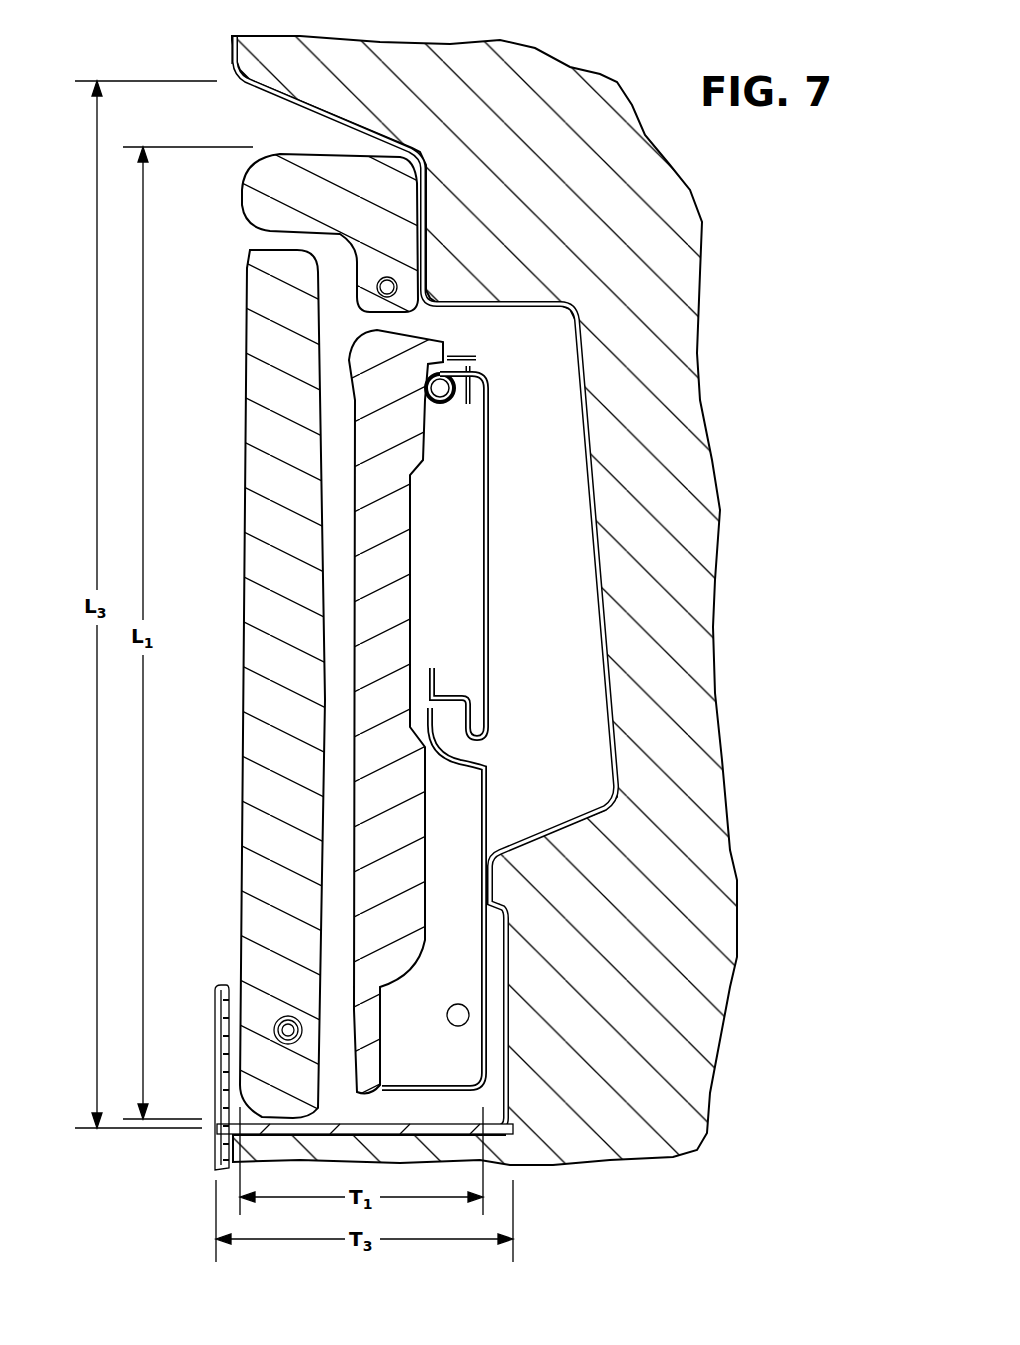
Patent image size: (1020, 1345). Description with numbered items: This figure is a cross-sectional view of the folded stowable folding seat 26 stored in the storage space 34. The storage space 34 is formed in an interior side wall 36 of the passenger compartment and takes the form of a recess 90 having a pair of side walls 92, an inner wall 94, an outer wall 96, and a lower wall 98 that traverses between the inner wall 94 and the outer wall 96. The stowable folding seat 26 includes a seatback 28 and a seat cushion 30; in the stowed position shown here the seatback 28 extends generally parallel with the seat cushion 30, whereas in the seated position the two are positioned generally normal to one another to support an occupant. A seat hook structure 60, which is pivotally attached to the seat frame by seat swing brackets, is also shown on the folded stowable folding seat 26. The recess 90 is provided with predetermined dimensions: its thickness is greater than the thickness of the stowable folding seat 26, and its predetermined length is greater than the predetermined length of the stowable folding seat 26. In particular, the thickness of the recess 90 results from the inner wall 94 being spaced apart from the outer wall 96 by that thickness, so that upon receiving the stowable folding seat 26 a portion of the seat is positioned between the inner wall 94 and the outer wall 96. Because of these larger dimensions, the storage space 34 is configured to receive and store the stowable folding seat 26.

The stowable folding seat 26 is at (229, 188).
The seatback 28 is at (262, 382).
The seat cushion 30 is at (388, 368).
The storage space 34 is at (186, 67).
The interior side wall 36 is at (235, 57).
The seat hook structure 60 is at (488, 484).
The recess 90 is at (425, 582).
The side walls 92 is at (560, 557).
The inner wall 94 is at (612, 728).
The outer wall 96 is at (213, 1045).
The lower wall 98 is at (418, 1127).